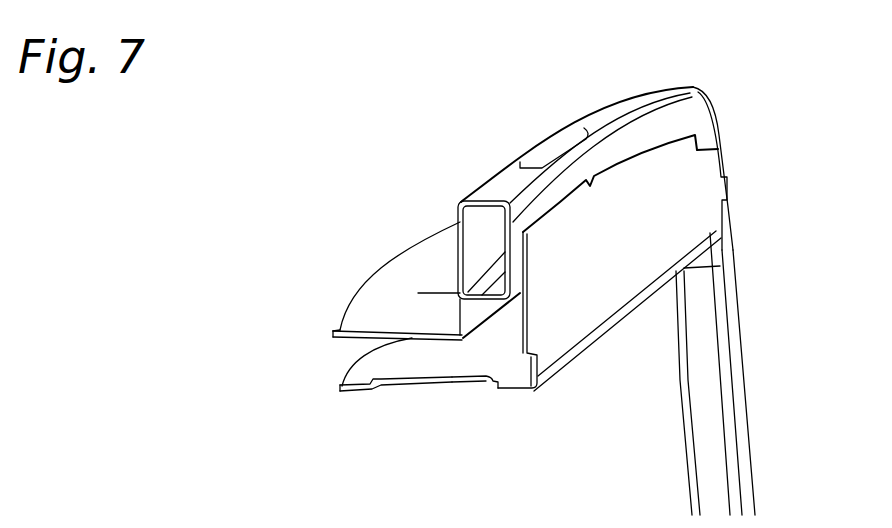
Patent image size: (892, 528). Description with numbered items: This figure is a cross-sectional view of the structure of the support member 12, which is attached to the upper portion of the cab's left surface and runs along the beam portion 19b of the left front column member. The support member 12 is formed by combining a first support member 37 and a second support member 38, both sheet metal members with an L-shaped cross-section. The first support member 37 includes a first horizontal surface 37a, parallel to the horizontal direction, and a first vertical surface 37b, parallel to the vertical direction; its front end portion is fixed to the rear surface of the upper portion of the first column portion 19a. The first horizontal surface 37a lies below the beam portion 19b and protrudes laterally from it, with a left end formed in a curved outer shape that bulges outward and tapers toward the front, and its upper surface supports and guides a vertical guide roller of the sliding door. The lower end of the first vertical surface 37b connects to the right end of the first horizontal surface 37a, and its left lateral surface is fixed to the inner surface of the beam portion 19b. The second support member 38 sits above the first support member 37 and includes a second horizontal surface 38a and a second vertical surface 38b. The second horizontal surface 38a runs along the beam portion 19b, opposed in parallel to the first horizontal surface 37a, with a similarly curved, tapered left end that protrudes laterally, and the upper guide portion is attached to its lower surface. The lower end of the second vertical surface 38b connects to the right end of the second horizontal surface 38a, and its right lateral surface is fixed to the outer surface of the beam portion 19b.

The support member 12 is at (305, 313).
The first column portion 19a is at (703, 383).
The beam portion 19b is at (513, 179).
The first support member 37 is at (485, 390).
The first horizontal surface 37a is at (436, 362).
The first vertical surface 37b is at (588, 306).
The second support member 38 is at (390, 243).
The second horizontal surface 38a is at (388, 301).
The second vertical surface 38b is at (452, 271).